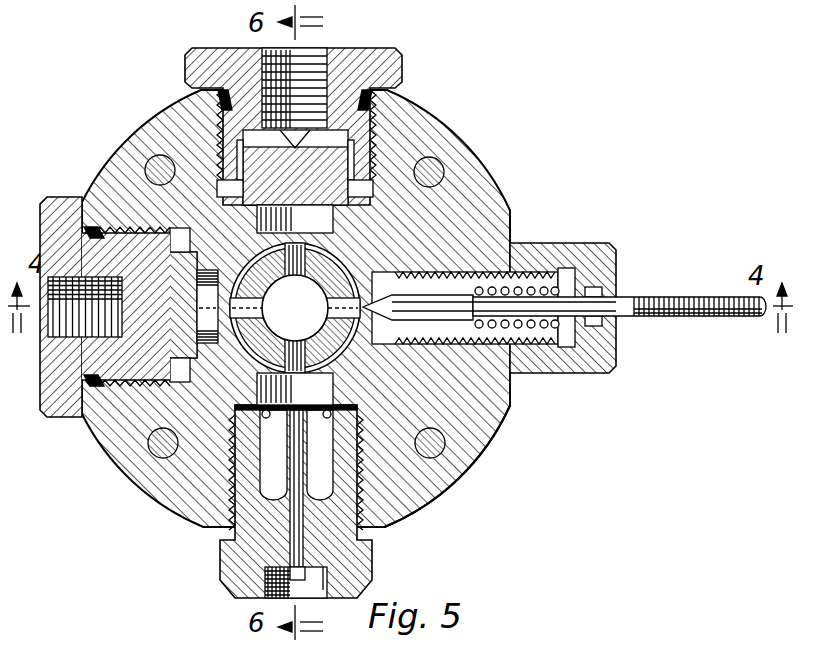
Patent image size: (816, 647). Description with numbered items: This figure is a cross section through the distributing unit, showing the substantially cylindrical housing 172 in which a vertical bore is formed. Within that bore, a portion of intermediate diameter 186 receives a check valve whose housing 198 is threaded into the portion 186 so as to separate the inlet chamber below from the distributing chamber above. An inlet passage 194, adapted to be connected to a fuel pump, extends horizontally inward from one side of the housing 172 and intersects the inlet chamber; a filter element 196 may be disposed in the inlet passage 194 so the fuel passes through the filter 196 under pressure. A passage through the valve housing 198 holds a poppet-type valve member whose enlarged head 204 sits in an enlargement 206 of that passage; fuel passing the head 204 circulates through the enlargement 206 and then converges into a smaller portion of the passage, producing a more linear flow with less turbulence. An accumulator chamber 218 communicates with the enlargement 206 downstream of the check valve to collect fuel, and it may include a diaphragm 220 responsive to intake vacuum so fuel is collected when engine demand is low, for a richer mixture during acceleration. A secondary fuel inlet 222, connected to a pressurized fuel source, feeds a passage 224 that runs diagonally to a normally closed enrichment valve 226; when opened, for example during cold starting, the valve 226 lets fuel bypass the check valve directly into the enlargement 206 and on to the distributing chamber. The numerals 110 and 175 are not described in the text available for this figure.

The valve body 110 is at (486, 168).
The housing 172 is at (460, 467).
The secondary fuel inlet 222 is at (385, 68).
The portion of intermediate diameter 186 is at (295, 219).
The filter element 196 is at (166, 245).
The enlarged head 204 is at (272, 292).
The enlargement 206 is at (295, 308).
The ball chamber 175 is at (350, 360).
The passage 224 is at (433, 273).
The enrichment valve 226 is at (450, 312).
The inlet passage 194 is at (60, 320).
The diaphragm 220 is at (242, 425).
The accumulator chamber 218 is at (263, 403).
The housing 198 is at (277, 385).